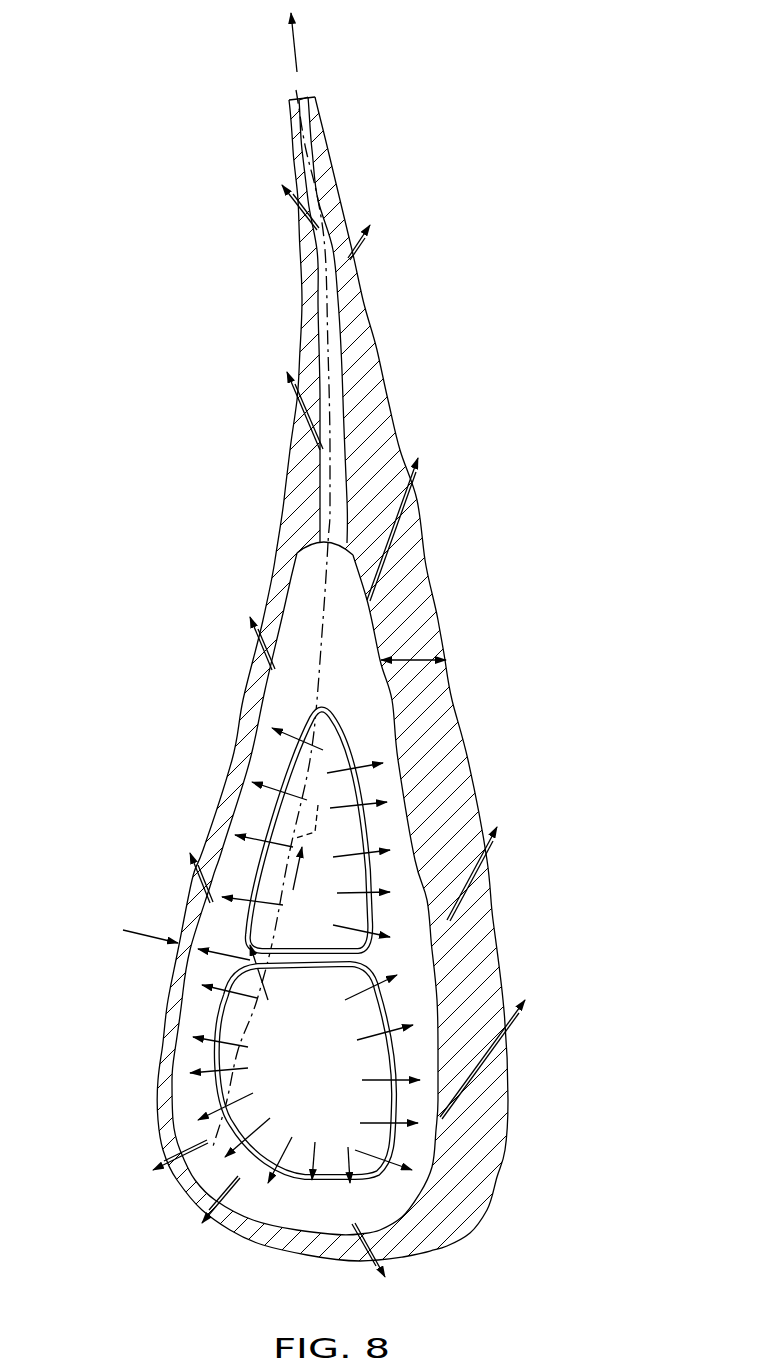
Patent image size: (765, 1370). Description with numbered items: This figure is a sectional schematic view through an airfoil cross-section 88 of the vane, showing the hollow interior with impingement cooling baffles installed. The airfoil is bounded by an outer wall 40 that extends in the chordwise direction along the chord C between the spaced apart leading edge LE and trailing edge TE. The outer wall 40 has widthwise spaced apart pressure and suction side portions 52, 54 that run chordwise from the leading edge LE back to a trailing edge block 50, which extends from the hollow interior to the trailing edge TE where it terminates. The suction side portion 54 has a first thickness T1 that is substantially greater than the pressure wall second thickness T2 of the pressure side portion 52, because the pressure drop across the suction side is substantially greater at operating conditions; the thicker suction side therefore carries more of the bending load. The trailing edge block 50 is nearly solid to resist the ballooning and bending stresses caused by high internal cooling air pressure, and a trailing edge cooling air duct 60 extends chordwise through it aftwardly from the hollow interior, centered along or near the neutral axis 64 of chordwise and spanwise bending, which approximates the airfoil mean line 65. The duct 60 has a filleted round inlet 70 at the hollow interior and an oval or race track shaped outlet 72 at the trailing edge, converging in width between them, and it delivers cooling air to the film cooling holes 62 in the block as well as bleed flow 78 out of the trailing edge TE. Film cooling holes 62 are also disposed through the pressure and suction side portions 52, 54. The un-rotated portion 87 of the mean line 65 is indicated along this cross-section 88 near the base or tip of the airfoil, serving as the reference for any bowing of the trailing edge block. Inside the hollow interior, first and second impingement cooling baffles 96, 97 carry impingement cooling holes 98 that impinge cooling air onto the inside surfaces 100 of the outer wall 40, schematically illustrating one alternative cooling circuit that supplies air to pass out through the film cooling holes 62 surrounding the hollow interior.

The outer wall 40 is at (496, 905).
The trailing edge block 50 is at (362, 283).
The pressure side portion 52 is at (241, 716).
The suction side portion 54 is at (472, 770).
The trailing edge cooling air ducts 60 is at (344, 479).
The film cooling holes 62 is at (368, 340).
The neutral axis 64 is at (327, 345).
The airfoil mean line 65 is at (343, 850).
The filleted round inlets 70 is at (348, 542).
The oval or race track shaped outlets 72 is at (299, 98).
The bleed flow 78 is at (292, 40).
The un-rotated portion of the mean line 87 is at (318, 244).
The airfoil cross-section 88 is at (290, 468).
The first impingement cooling baffle 96 is at (213, 1020).
The second impingement cooling baffle 97 is at (291, 750).
The impingement cooling holes 98 is at (250, 855).
The inside surfaces 100 is at (236, 818).
The trailing edge TE is at (313, 98).
The leading edge LE is at (187, 1168).
The first thickness T1 is at (410, 659).
The pressure wall second thickness T2 is at (124, 931).
The chord C is at (298, 896).